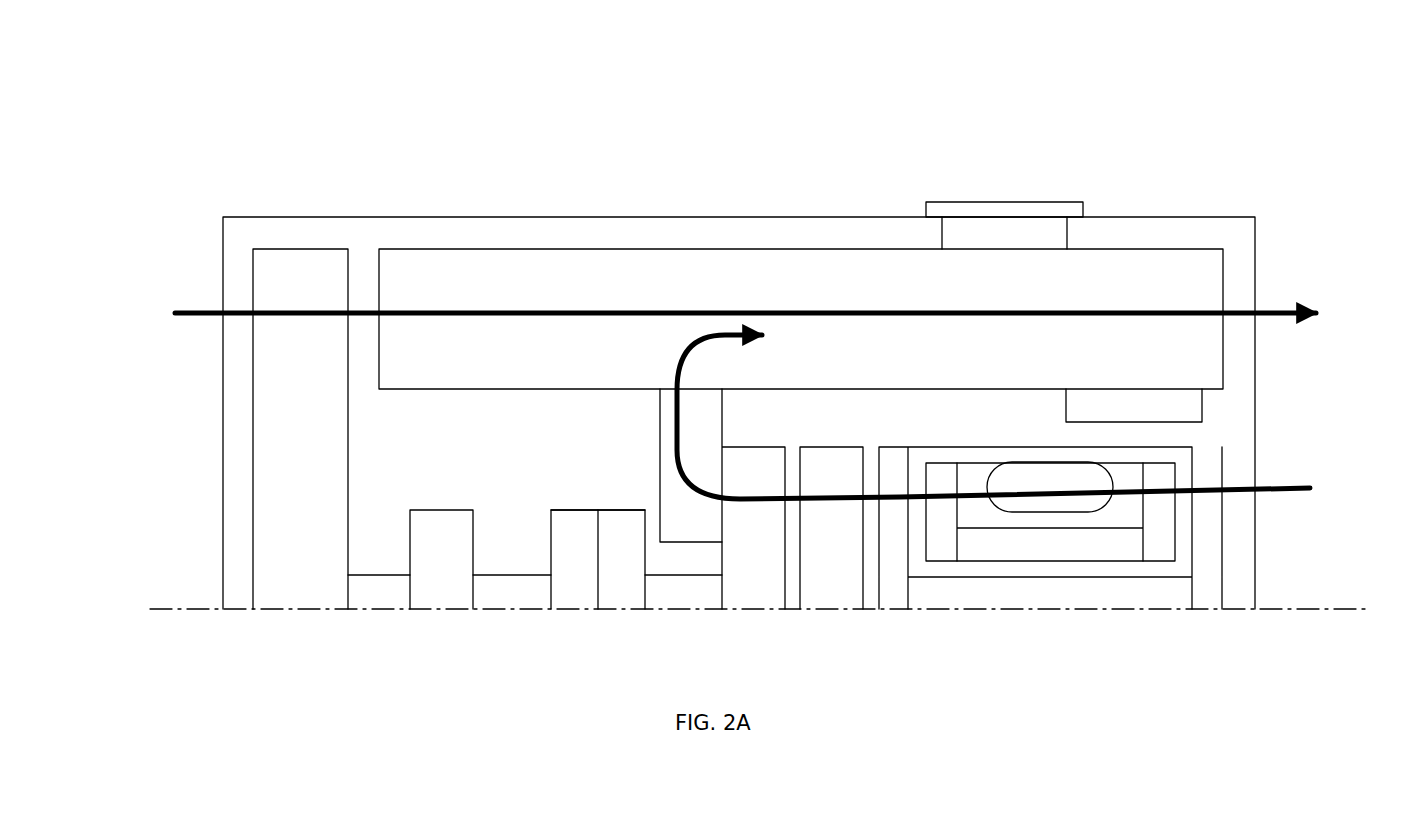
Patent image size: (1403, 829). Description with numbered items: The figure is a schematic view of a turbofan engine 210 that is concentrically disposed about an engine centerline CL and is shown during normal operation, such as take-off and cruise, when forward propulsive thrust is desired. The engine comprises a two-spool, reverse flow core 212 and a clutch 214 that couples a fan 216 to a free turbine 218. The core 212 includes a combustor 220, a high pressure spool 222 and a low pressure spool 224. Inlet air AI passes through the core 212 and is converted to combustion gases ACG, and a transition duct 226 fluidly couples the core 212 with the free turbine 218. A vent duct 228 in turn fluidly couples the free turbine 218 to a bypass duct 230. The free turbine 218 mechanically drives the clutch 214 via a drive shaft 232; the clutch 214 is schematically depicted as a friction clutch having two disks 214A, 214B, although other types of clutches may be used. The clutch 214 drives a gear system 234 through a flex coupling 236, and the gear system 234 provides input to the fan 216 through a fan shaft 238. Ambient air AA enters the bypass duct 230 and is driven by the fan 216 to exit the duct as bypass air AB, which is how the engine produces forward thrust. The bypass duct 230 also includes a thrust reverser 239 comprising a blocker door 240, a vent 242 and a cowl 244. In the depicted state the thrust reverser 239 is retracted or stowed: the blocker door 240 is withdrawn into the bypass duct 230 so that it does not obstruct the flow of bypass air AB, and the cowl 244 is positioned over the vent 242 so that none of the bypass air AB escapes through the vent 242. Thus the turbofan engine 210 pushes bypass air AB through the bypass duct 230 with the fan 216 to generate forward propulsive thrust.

The turbofan engine 210 is at (750, 170).
The reverse flow core 212 is at (1038, 617).
The clutch 214 is at (570, 572).
The clutch disk 214A is at (572, 520).
The clutch disk 214B is at (632, 520).
The fan 216 is at (300, 429).
The free turbine 218 is at (753, 499).
The combustor 220 is at (1042, 470).
The high pressure spool 222 is at (1172, 464).
The low pressure spool 224 is at (1226, 447).
The transition duct 226 is at (831, 528).
The vent duct 228 is at (691, 465).
The bypass duct 230 is at (518, 253).
The drive shaft 232 is at (683, 600).
The gear system 234 is at (441, 559).
The flex coupling 236 is at (522, 600).
The fan shaft 238 is at (380, 598).
The thrust reverser 239 is at (1034, 142).
The blocker door 240 is at (1150, 400).
The vent 242 is at (1070, 232).
The cowl 244 is at (947, 208).
The ambient air AA is at (211, 306).
The bypass air AB is at (1273, 312).
The inlet air AI is at (1282, 492).
The combustion gases ACG is at (810, 497).
The engine centerline CL is at (192, 608).